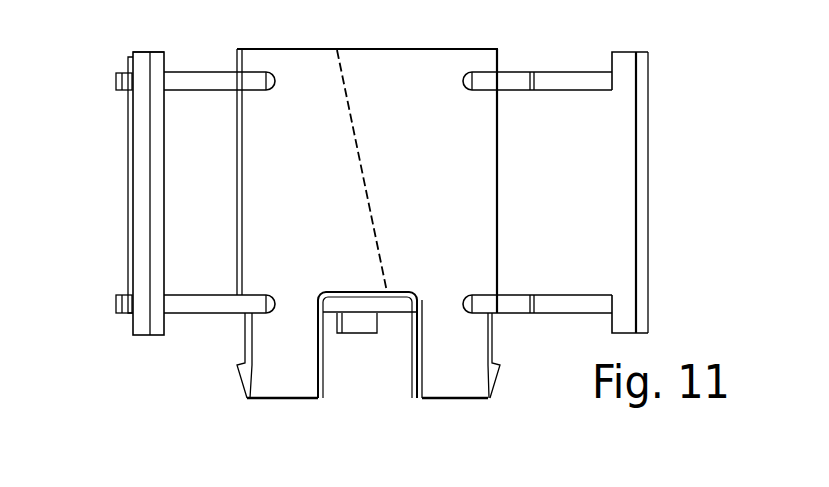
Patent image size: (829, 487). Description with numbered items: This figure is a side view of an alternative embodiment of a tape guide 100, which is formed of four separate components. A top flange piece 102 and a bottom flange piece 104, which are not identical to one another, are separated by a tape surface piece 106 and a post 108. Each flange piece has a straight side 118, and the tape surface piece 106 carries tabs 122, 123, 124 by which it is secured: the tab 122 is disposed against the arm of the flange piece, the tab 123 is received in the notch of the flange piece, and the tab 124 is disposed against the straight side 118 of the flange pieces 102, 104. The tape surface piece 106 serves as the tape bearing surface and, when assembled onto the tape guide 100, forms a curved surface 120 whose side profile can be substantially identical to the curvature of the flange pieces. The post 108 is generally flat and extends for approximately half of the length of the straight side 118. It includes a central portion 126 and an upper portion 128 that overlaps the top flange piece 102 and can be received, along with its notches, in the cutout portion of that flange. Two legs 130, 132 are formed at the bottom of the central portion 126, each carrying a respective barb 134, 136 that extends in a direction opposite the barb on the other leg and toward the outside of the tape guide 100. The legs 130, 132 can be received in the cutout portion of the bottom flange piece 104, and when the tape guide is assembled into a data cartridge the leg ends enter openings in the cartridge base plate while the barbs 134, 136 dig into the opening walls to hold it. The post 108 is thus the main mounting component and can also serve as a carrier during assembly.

The tape guide 100 is at (653, 167).
The top flange piece 102 is at (562, 78).
The bottom flange piece 104 is at (570, 305).
The tape surface piece 106 is at (133, 198).
The post 108 is at (292, 50).
The straight side 118 is at (587, 81).
The surface 120 is at (138, 247).
The tab 122 is at (142, 59).
The tab 123 is at (360, 322).
The tab 124 is at (622, 63).
The central portion 126 is at (483, 200).
The upper portion 128 is at (395, 67).
The leg 130 is at (290, 380).
The leg 132 is at (455, 383).
The barb 134 is at (258, 380).
The barb 136 is at (495, 387).